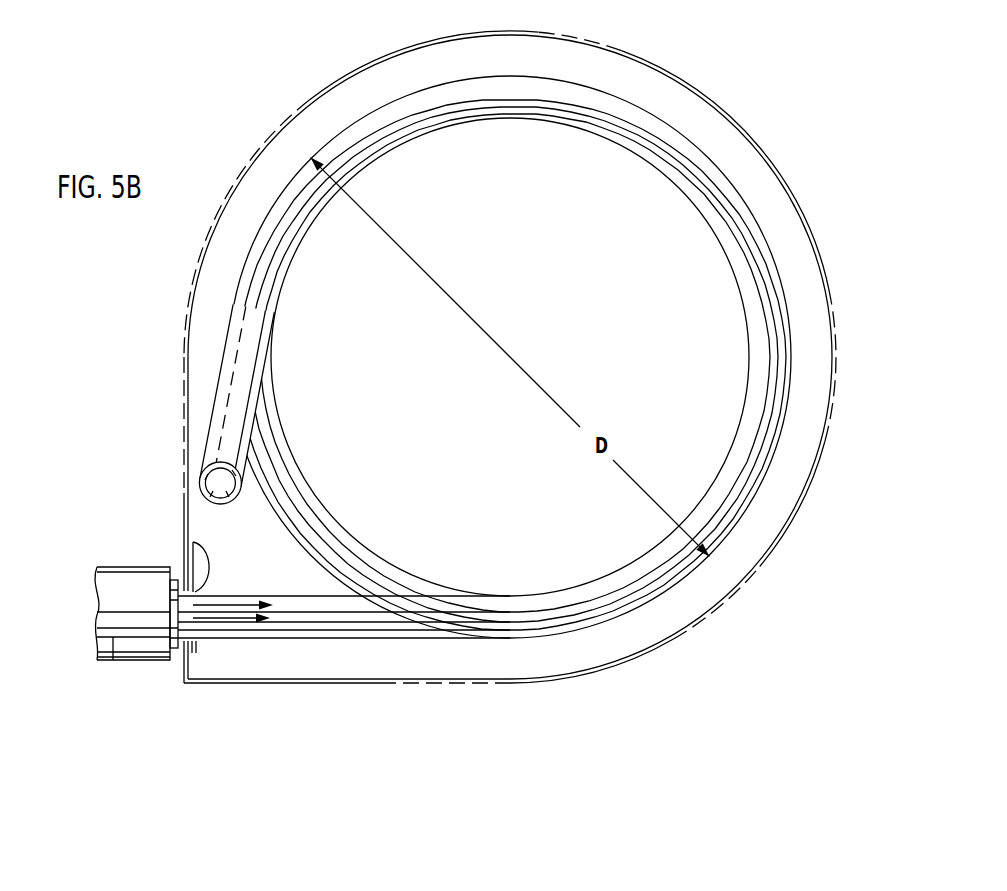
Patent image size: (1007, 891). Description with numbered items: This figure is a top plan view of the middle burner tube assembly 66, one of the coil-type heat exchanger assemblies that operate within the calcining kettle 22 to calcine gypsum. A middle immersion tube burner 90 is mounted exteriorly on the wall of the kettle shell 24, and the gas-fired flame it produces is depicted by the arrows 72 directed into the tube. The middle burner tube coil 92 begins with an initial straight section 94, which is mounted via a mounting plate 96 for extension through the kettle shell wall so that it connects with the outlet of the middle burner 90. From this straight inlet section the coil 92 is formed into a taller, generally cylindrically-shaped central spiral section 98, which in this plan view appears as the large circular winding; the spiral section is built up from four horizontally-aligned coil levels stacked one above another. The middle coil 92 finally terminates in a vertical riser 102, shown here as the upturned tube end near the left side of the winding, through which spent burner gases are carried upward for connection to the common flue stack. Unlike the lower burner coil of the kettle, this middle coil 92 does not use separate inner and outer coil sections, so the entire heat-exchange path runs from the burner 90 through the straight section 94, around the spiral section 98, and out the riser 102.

The calcining kettle 22 is at (824, 251).
The kettle shell 24 is at (440, 694).
The middle burner tube assembly 66 is at (804, 342).
The middle burner tube coil 92 is at (722, 163).
The central spiral section 98 is at (281, 392).
The vertical riser 102 is at (213, 494).
The mounting plate 96 is at (212, 556).
The middle immersion tube burner 90 is at (121, 640).
The initial straight section 94 is at (327, 628).
The gas-fired flame 72 is at (222, 622).